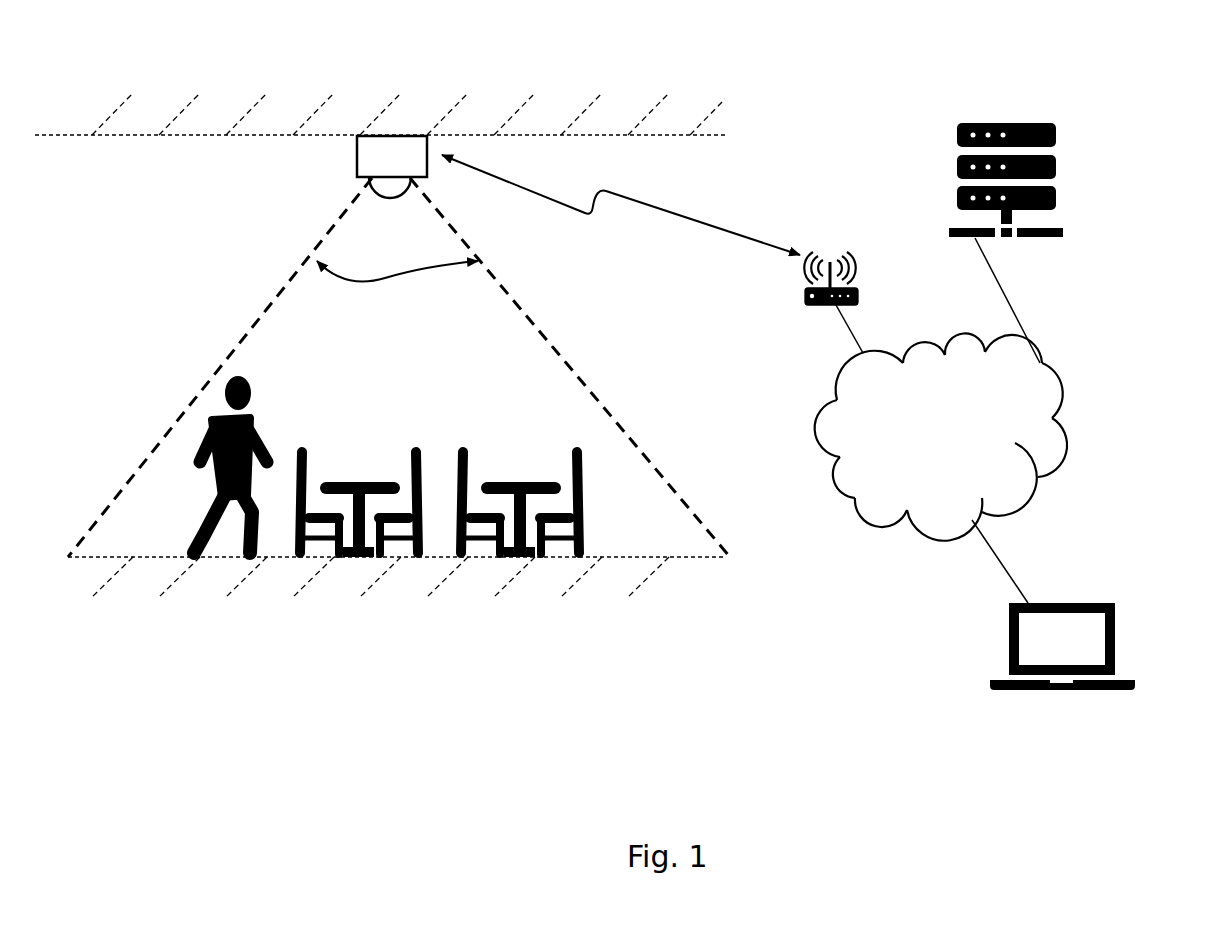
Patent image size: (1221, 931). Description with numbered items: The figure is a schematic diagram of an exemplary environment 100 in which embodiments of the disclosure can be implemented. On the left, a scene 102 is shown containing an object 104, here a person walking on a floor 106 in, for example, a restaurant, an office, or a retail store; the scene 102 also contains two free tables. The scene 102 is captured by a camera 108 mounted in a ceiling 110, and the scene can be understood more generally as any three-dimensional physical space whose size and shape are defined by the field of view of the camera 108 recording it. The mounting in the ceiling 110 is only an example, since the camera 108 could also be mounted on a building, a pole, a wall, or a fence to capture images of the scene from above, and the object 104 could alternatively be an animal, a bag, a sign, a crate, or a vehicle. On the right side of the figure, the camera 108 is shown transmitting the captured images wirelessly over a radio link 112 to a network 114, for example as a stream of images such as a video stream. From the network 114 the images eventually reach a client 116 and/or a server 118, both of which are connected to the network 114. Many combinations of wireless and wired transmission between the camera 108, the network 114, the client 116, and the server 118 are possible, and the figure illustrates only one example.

The environment 100 is at (96, 52).
The scene 102 is at (245, 290).
The object 104 is at (253, 433).
The floor 106 is at (625, 558).
The camera 108 is at (357, 160).
The ceiling 110 is at (85, 136).
The radio link 112 is at (650, 236).
The network 114 is at (898, 526).
The client 116 is at (1115, 615).
The server 118 is at (1057, 124).